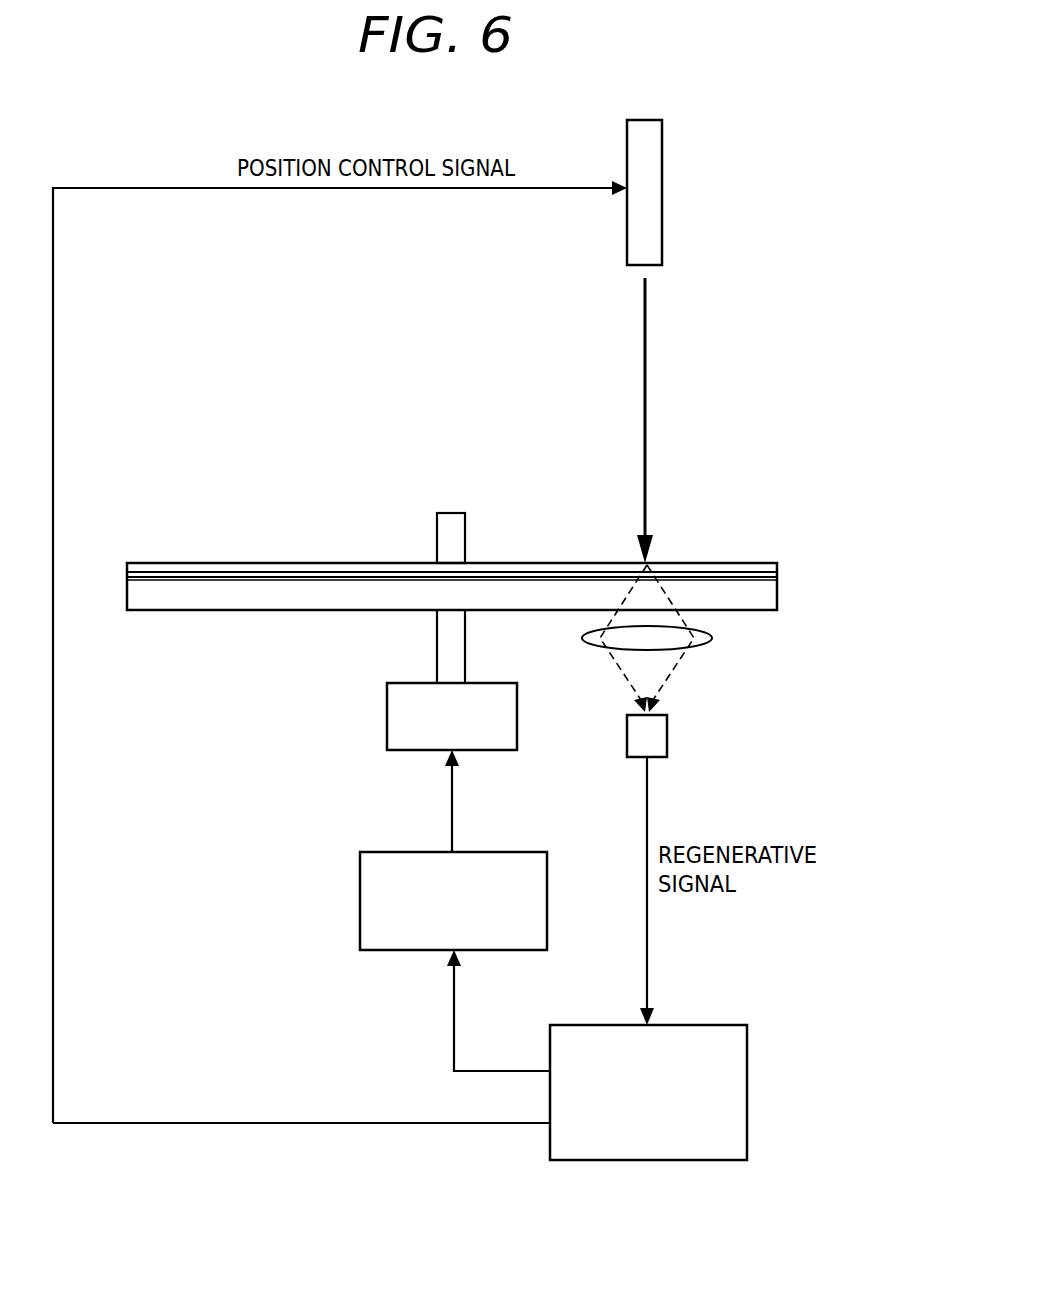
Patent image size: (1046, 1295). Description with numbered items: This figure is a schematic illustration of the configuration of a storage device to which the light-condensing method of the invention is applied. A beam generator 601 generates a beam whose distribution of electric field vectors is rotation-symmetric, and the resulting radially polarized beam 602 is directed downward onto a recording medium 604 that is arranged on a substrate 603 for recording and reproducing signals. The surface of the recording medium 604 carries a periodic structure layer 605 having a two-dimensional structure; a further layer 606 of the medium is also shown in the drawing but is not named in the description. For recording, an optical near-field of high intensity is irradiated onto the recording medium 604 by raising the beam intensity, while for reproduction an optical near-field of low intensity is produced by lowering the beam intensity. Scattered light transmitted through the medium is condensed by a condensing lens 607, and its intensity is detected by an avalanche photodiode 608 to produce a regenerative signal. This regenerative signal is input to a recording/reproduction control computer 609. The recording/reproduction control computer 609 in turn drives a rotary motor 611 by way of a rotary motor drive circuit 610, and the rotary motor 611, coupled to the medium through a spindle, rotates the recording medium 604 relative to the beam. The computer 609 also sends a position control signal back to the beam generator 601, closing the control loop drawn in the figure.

The beam generator 601 is at (663, 186).
The radially polarized beam 602 is at (643, 378).
The substrate 603 is at (165, 598).
The recording medium 604 is at (200, 563).
The periodic structure layer 605 is at (777, 568).
The reflective layer 606 is at (777, 580).
The condensing lens 607 is at (700, 646).
The avalanche photodiode 608 is at (667, 732).
The recording/reproduction control computer 609 is at (747, 1080).
The rotary motor drive circuit 610 is at (360, 892).
The rotary motor 611 is at (387, 718).